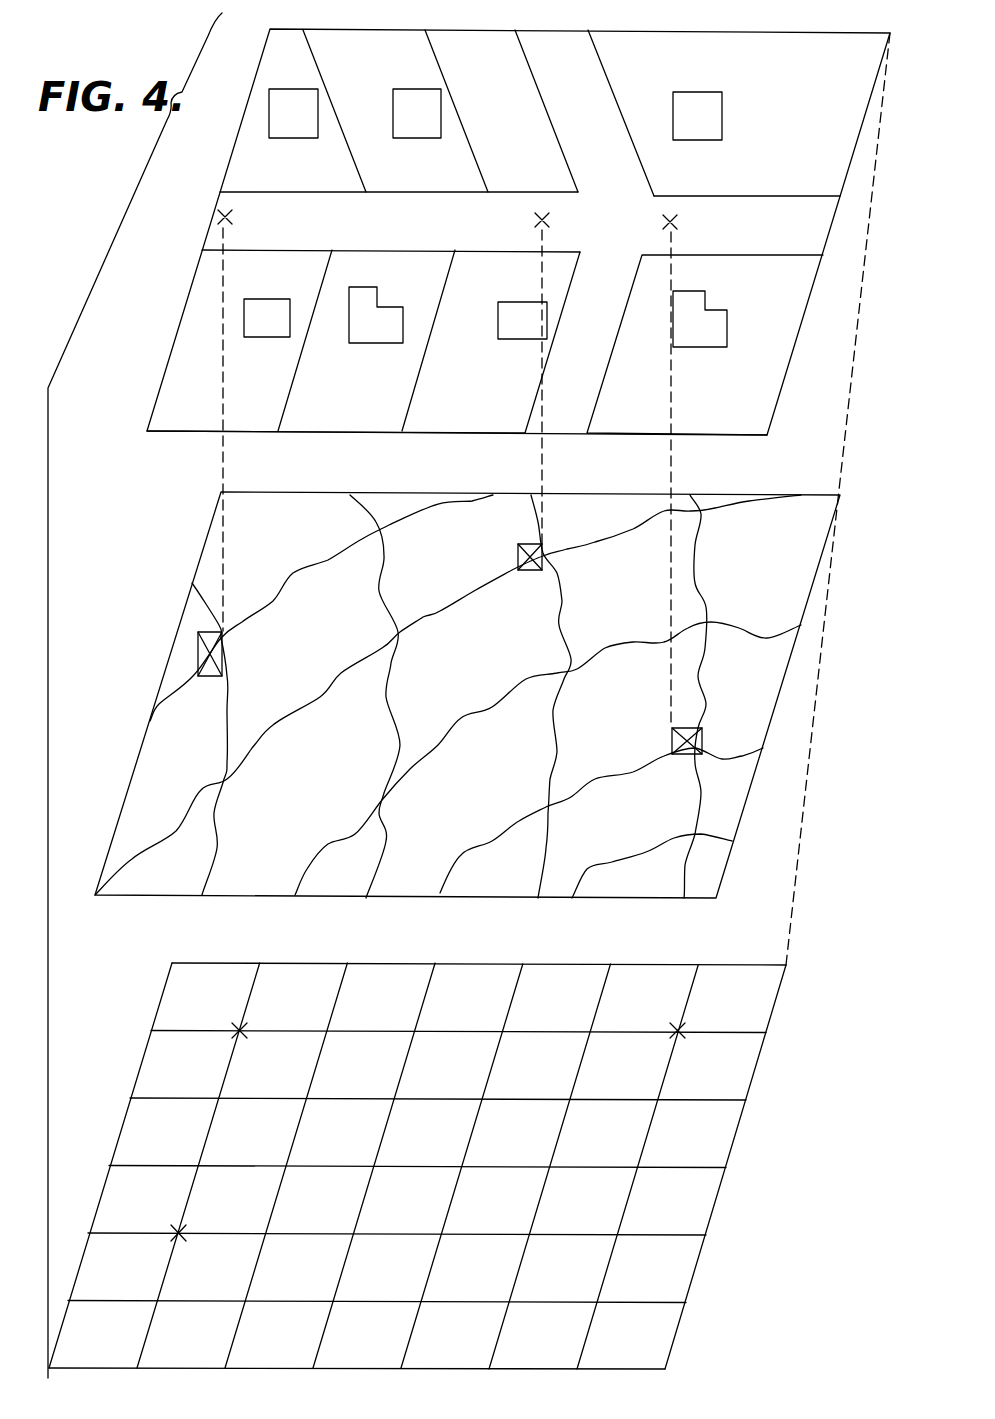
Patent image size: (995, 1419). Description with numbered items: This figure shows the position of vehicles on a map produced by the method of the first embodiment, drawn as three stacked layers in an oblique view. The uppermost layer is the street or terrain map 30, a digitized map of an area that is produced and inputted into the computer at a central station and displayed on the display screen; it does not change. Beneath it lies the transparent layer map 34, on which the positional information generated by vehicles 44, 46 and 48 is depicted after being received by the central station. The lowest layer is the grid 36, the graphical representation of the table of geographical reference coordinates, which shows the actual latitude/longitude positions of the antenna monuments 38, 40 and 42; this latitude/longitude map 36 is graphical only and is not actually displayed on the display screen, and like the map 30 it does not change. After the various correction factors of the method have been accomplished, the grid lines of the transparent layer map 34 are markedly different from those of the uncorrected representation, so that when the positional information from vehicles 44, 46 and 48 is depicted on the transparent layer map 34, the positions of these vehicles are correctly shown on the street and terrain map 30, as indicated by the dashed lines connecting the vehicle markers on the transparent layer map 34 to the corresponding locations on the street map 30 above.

The street or terrain map 30 is at (218, 192).
The transparent layer map 34 is at (172, 648).
The table of geographical reference coordinates 36 is at (161, 996).
The antenna monument 38 is at (680, 1028).
The antenna monument 40 is at (181, 1231).
The antenna monument 42 is at (241, 1028).
The vehicle 44 is at (221, 633).
The vehicle 46 is at (519, 551).
The vehicle 48 is at (673, 737).